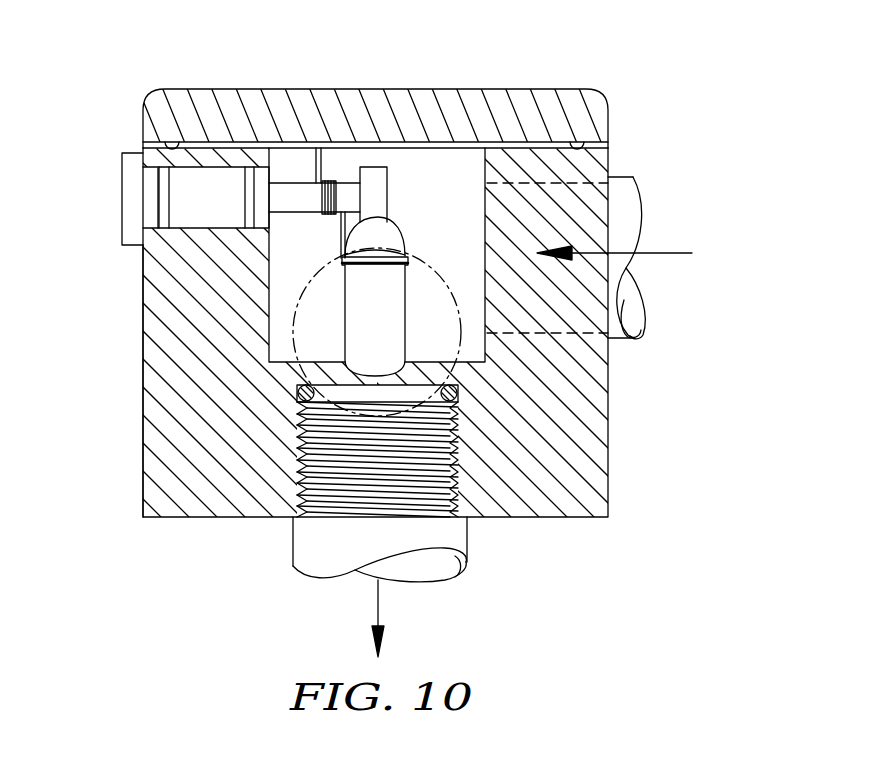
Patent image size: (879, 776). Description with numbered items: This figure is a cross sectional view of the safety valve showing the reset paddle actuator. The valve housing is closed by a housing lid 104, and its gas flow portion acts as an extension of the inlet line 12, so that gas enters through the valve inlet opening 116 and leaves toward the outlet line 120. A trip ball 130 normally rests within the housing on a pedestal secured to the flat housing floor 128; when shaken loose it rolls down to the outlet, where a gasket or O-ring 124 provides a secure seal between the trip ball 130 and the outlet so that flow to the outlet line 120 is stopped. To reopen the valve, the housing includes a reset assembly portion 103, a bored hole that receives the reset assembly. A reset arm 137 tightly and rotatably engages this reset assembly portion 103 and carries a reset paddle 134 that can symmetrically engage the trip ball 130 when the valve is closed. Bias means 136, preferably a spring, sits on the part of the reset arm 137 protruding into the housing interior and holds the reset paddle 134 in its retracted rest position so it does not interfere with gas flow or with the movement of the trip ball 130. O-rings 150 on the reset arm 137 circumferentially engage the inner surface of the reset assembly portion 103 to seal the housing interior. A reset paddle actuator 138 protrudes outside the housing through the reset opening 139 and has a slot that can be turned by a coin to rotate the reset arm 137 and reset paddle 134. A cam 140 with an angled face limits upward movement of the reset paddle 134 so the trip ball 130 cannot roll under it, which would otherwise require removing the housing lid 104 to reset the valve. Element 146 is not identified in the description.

The inlet line 12 is at (615, 175).
The reset assembly portion 103 is at (156, 168).
The housing lid 104 is at (567, 117).
The valve inlet opening 116 is at (486, 300).
The outlet line 120 is at (294, 524).
The gasket or O-ring 124 is at (437, 398).
The flat housing floor 128 is at (426, 362).
The trip ball 130 is at (326, 291).
The reset paddle 134 is at (388, 306).
The bias means 136 is at (338, 182).
The reset arm 137 is at (147, 262).
The reset paddle actuator 138 is at (122, 208).
The reset opening 139 is at (274, 178).
The cam 140 is at (388, 182).
The seal 146 is at (484, 170).
The O-rings 150 is at (247, 193).